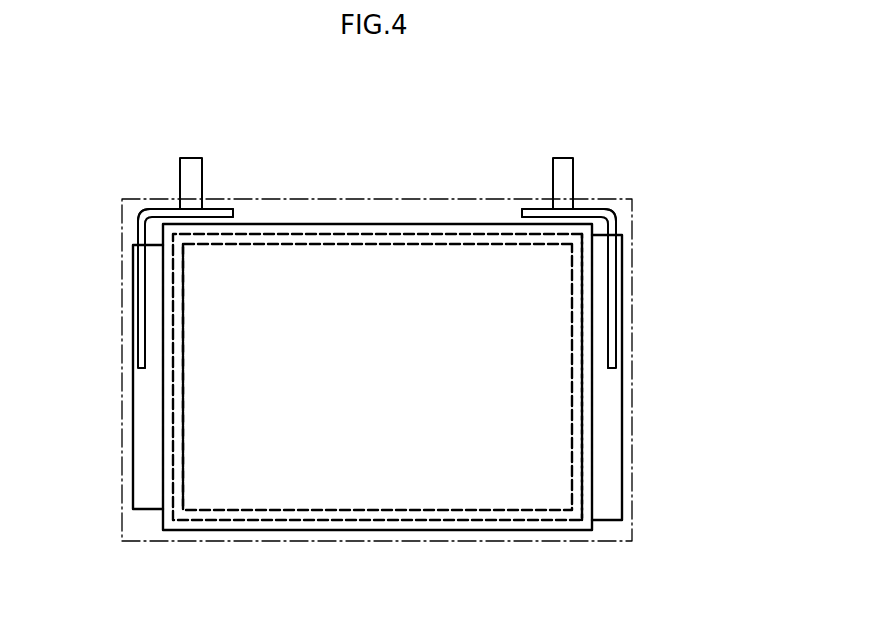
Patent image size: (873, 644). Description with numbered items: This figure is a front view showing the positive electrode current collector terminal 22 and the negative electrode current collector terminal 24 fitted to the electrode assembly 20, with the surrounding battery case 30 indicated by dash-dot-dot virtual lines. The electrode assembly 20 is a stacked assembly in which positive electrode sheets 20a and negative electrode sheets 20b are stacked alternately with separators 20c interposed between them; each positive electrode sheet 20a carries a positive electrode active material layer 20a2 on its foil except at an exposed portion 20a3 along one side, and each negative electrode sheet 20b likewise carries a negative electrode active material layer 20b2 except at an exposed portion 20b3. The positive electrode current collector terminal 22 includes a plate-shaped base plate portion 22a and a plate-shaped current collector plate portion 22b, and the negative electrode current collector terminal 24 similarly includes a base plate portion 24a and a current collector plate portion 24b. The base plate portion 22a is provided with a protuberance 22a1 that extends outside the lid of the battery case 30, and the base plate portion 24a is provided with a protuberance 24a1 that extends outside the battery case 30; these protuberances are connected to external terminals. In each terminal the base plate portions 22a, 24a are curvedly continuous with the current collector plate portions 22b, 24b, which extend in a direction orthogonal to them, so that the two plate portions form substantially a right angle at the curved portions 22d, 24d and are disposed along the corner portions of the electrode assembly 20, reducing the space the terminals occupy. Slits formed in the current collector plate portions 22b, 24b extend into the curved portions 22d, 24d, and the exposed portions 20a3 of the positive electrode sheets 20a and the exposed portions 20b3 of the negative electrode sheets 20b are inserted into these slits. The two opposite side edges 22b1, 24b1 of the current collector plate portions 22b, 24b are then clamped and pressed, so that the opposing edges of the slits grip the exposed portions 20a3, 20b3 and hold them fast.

The electrode assembly 20 is at (375, 422).
The positive electrode sheet 20a is at (253, 511).
The positive electrode active material layer 20a2 is at (188, 493).
The exposed portion 20a3 is at (145, 470).
The negative electrode sheet 20b is at (485, 521).
The negative electrode active material layer 20b2 is at (577, 497).
The exposed portion 20b3 is at (613, 457).
The separator 20c is at (317, 532).
The positive electrode current collector terminal 22 is at (161, 230).
The base plate portion 22a is at (215, 208).
The protuberance 22a1 is at (187, 158).
The current collector plate portion 22b is at (136, 320).
The side edge 22b1 is at (143, 345).
The curved portion 22d is at (137, 209).
The negative electrode current collector terminal 24 is at (588, 230).
The base plate portion 24a is at (535, 208).
The protuberance 24a1 is at (562, 158).
The current collector plate portion 24b is at (618, 303).
The side edge 24b1 is at (613, 342).
The curved portion 24d is at (617, 210).
The battery case 30 is at (637, 397).